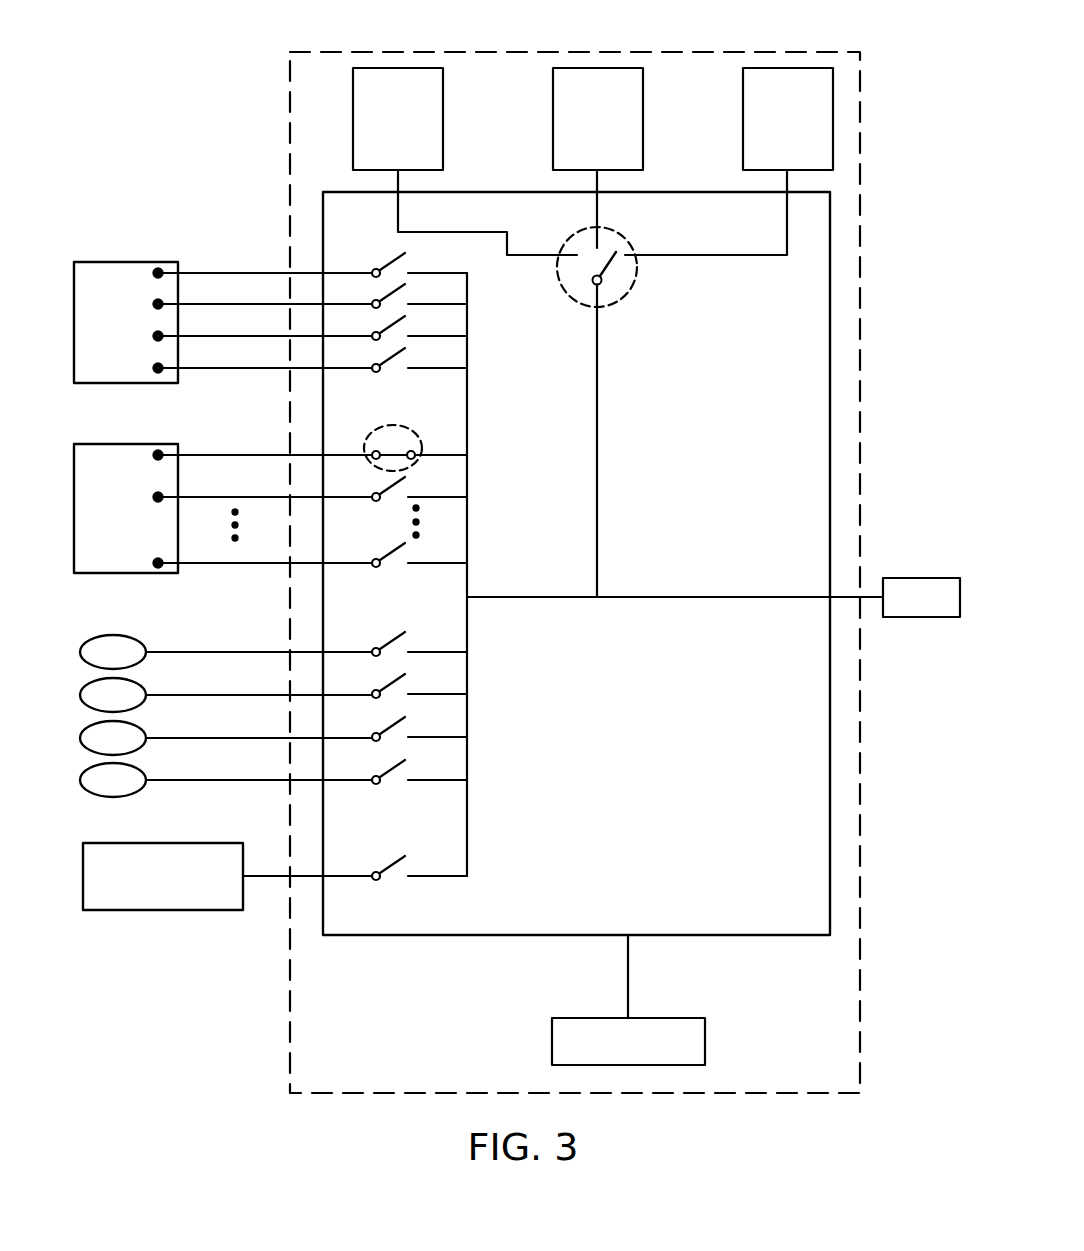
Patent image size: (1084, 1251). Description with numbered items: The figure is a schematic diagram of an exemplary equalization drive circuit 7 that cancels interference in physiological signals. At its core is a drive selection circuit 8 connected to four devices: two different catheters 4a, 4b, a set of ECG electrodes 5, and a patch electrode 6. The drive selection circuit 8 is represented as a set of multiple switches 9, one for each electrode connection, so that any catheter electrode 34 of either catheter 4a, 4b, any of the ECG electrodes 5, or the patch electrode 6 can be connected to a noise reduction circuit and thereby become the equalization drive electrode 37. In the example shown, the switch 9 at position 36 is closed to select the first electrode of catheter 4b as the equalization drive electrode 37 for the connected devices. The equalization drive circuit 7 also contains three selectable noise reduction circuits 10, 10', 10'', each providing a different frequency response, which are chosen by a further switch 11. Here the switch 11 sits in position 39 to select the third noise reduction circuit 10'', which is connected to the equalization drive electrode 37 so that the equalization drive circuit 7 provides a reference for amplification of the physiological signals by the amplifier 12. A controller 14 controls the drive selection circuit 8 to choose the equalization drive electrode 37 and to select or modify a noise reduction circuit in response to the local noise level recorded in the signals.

The equalization drive circuit 7 is at (860, 1025).
The drive selection circuit 8 is at (831, 745).
The noise reduction circuit 10 is at (465, 131).
The noise reduction circuit 10' is at (598, 128).
The noise reduction circuit 10'' is at (729, 131).
The switch 11 is at (612, 258).
The position 39 is at (626, 298).
The amplifier 12 is at (921, 576).
The controller 14 is at (706, 1037).
The catheter 4a is at (112, 262).
The catheter 4b is at (112, 452).
The catheter electrode 34 is at (160, 302).
The equalization drive electrode 37 is at (258, 456).
The switches 9 is at (378, 314).
The position 36 is at (411, 430).
The ECG electrodes 5 is at (80, 655).
The patch electrode 6 is at (172, 911).